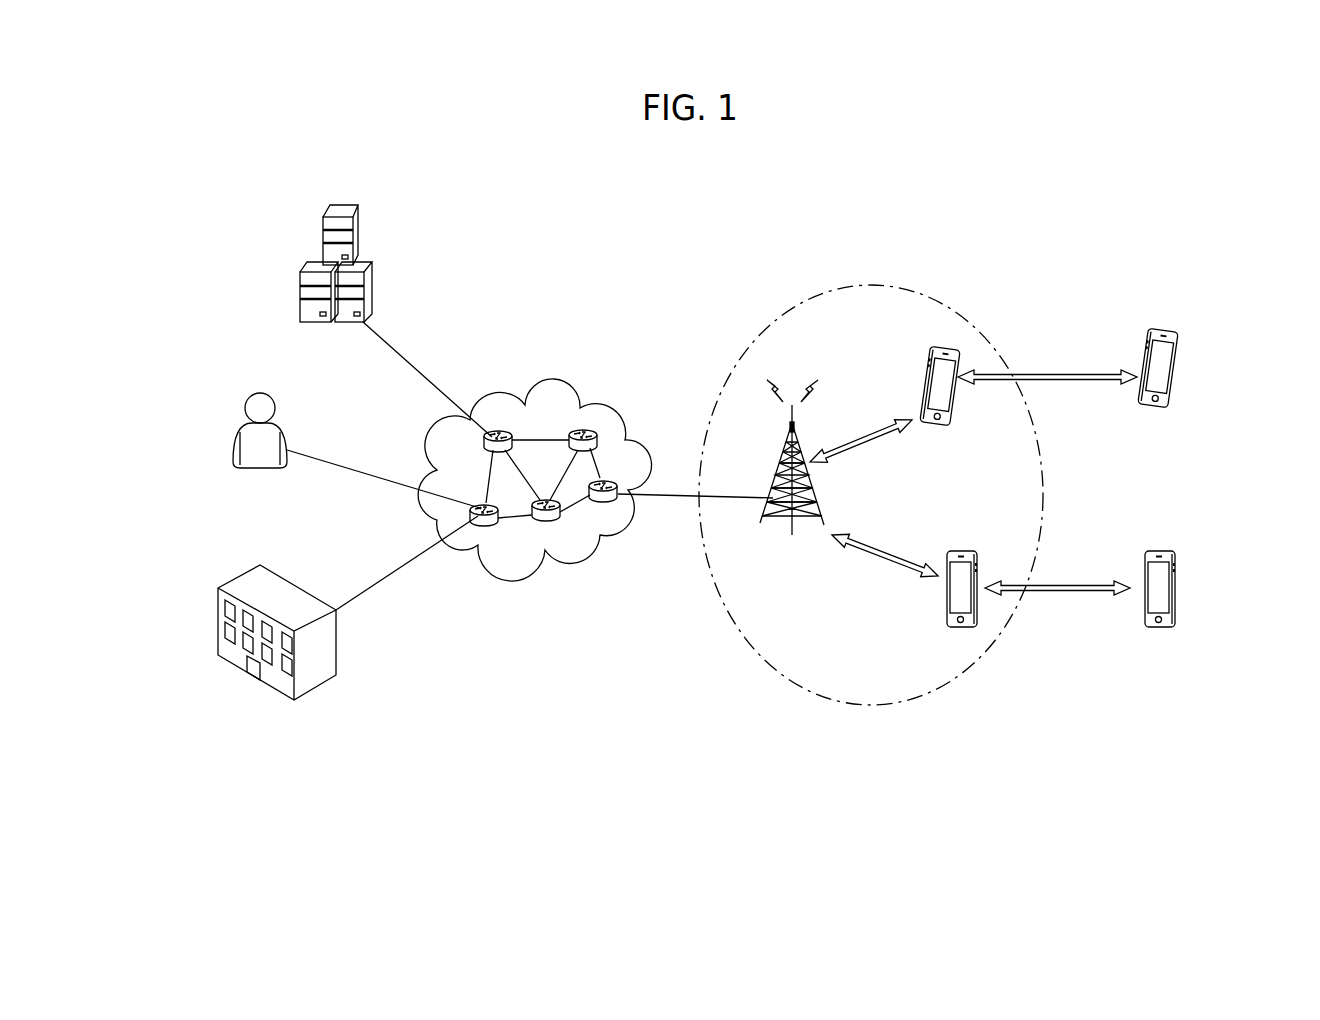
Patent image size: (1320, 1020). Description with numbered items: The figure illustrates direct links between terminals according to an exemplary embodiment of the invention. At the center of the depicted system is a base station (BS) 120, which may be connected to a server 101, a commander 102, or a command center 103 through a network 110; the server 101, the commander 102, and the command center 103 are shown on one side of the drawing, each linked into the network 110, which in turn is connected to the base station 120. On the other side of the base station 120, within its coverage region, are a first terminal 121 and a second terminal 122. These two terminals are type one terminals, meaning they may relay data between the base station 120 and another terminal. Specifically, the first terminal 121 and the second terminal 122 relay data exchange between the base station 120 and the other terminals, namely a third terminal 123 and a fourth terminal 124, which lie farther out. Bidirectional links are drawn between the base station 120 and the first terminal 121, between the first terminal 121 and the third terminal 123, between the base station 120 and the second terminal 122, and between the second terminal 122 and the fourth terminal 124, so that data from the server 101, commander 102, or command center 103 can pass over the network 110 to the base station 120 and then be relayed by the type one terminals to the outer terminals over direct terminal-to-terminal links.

The server 101 is at (300, 283).
The commander 102 is at (249, 395).
The command center 103 is at (232, 668).
The network 110 is at (553, 402).
The base station 120 is at (783, 462).
The terminal 1 121 is at (927, 358).
The terminal 2 122 is at (947, 616).
The terminal 3 123 is at (1157, 330).
The terminal 4 124 is at (1160, 630).